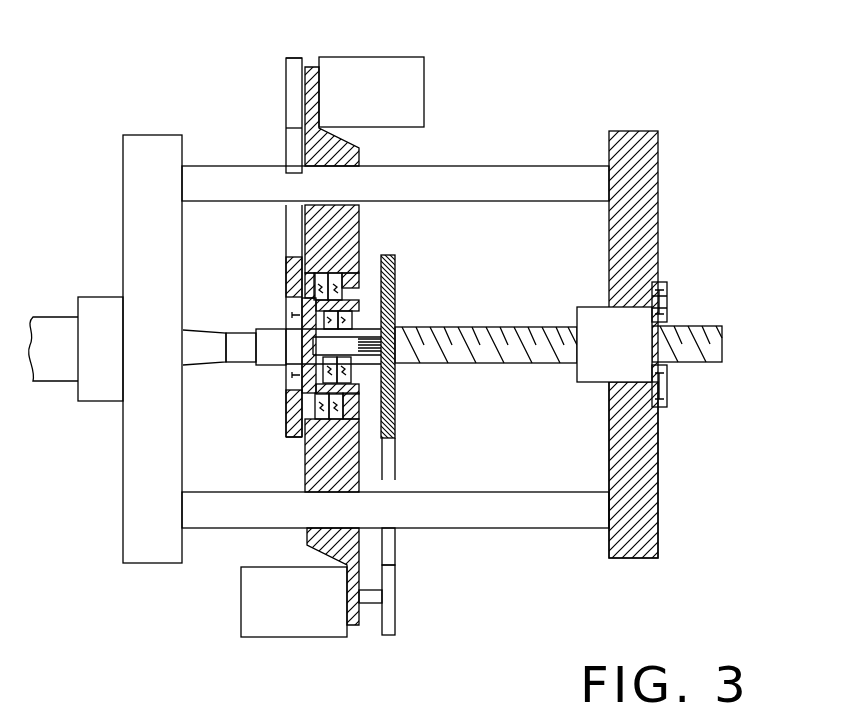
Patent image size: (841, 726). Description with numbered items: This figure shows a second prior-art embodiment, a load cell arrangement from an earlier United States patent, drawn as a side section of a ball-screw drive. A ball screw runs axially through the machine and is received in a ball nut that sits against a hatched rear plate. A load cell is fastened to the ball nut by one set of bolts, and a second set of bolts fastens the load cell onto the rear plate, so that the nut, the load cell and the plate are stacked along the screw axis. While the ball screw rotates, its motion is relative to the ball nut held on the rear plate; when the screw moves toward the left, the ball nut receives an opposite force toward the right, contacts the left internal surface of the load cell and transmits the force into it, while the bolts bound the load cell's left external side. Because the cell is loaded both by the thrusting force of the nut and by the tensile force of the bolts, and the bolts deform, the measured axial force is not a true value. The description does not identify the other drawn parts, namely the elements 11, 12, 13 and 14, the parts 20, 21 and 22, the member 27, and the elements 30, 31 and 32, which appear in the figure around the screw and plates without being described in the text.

The first end plate 11 is at (150, 138).
The second end plate 12 is at (630, 133).
The bearing housing / hub 13 is at (360, 155).
The guide rail 14 is at (545, 528).
The drive block 20 is at (296, 630).
The disk bar 21 is at (395, 605).
The disk bar upper portion 22 is at (392, 548).
The drive shaft 27 is at (237, 363).
The upper block 30 is at (365, 60).
The thin plate top 31 is at (294, 62).
The thin plate 32 is at (294, 152).